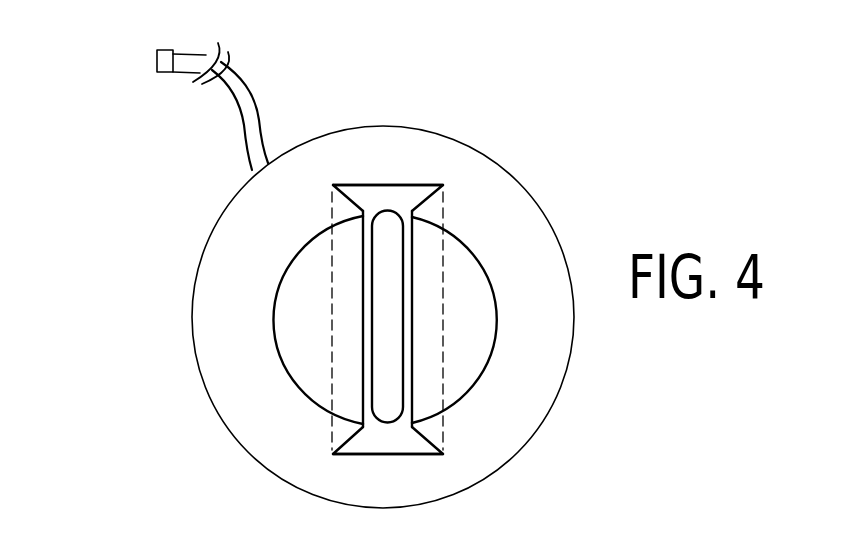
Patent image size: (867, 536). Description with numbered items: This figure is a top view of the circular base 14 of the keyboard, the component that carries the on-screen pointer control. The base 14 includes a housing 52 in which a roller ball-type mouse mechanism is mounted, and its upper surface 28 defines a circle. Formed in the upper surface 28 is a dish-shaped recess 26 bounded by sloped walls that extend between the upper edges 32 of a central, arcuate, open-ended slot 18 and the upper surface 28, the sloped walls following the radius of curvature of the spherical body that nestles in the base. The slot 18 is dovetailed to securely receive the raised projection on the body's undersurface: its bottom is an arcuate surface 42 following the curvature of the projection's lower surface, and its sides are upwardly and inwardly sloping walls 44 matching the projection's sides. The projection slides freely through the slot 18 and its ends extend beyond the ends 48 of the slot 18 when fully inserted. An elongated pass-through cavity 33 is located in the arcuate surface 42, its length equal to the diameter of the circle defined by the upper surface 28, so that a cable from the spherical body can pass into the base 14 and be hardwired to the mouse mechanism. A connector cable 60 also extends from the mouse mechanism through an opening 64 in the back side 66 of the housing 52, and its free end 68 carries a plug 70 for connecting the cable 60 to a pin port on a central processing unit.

The base 14 is at (186, 327).
The slot 18 is at (349, 461).
The dish-shaped recess 26 is at (286, 337).
The upper surface 28 is at (276, 278).
The upper edges 32 is at (363, 333).
The elongated pass-through cavity 33 is at (385, 316).
The arcuate surface 42 is at (400, 438).
The sloping walls 44 is at (352, 204).
The ends of the slot 48 is at (362, 185).
The housing 52 is at (234, 377).
The connector cable 60 is at (257, 69).
The opening 64 is at (250, 170).
The back side 66 is at (377, 127).
The free end 68 is at (195, 53).
The plug 70 is at (157, 62).